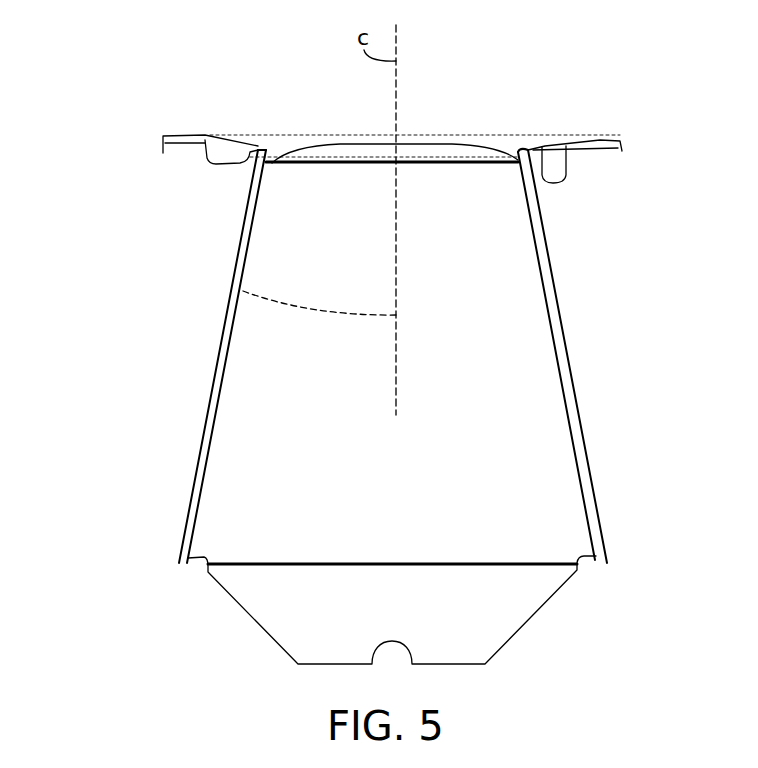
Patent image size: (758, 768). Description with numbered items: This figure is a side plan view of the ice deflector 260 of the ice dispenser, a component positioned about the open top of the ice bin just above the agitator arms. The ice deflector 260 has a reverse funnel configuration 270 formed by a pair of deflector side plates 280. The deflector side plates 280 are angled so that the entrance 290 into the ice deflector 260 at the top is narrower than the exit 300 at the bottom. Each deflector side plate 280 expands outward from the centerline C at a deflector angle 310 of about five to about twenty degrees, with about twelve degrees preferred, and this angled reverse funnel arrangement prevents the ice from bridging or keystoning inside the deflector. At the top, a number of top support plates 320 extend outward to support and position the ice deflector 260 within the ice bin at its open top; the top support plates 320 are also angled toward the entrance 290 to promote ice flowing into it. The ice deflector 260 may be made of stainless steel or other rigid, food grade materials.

The ice deflector 260 is at (110, 122).
The reverse funnel configuration 270 is at (222, 363).
The deflector side plates 280 is at (200, 462).
The entrance 290 is at (412, 177).
The exit 300 is at (428, 587).
The deflector angle 310 is at (326, 312).
The top support plates 320 is at (593, 135).